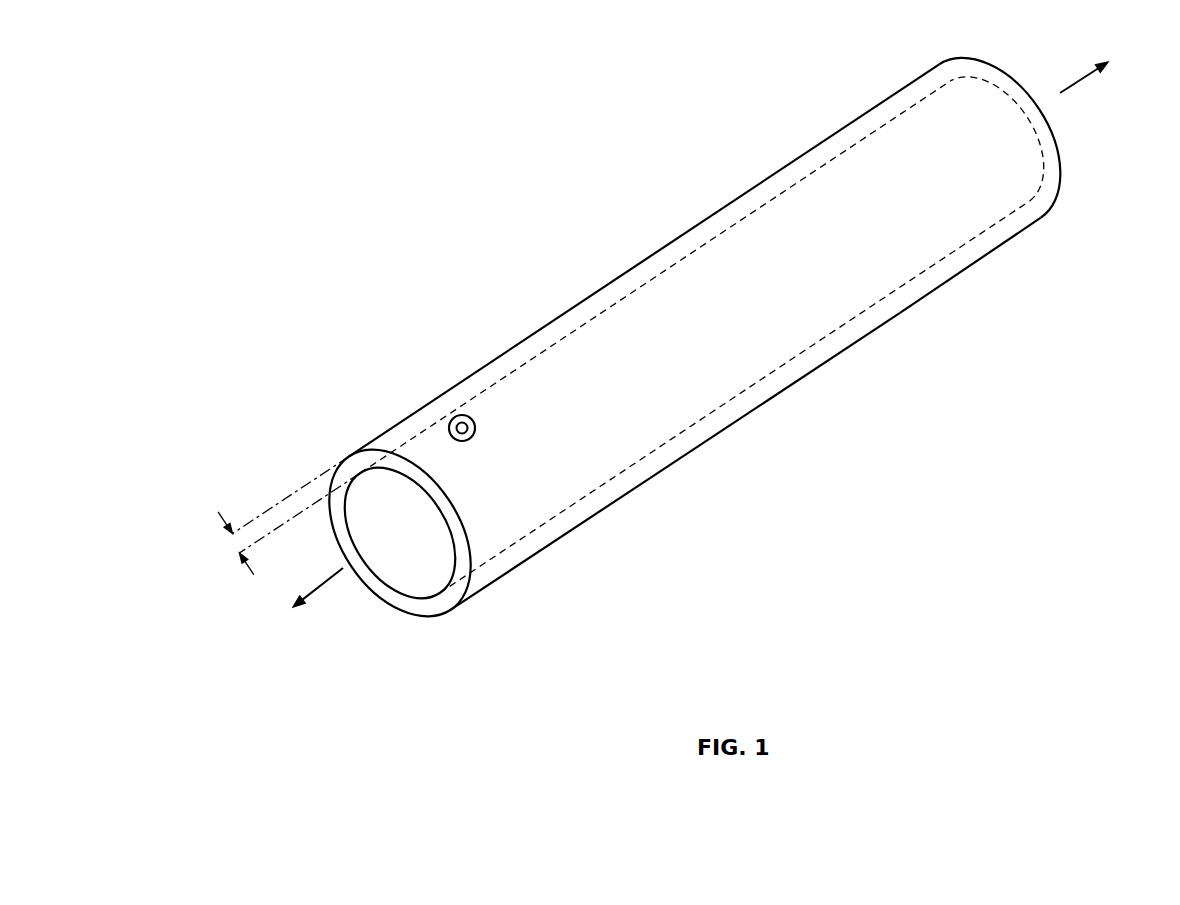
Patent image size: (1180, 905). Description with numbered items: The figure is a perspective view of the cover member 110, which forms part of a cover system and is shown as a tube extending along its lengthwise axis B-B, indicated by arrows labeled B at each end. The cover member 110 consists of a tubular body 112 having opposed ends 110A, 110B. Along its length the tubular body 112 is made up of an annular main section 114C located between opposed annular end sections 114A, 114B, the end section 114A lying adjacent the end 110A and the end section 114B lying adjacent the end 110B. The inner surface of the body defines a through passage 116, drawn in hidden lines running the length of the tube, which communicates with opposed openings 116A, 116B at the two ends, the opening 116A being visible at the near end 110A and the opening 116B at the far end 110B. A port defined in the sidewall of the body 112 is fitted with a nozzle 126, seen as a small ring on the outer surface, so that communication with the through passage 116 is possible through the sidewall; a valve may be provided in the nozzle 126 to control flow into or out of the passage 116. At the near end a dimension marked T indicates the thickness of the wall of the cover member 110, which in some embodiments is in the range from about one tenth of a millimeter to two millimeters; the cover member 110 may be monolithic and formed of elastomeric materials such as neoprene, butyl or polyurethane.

The cover member 110 is at (297, 357).
The first end 110A is at (397, 608).
The second end 110B is at (965, 53).
The tubular body 112 is at (815, 371).
The first annular end section 114A is at (530, 544).
The second annular end section 114B is at (1002, 230).
The annular main section 114C is at (742, 402).
The through passage 116 is at (715, 272).
The first opening 116A is at (383, 576).
The second opening 116B is at (1058, 155).
The nozzle 126 is at (457, 415).
The thickness T is at (218, 512).
The lengthwise axis B is at (700, 336).